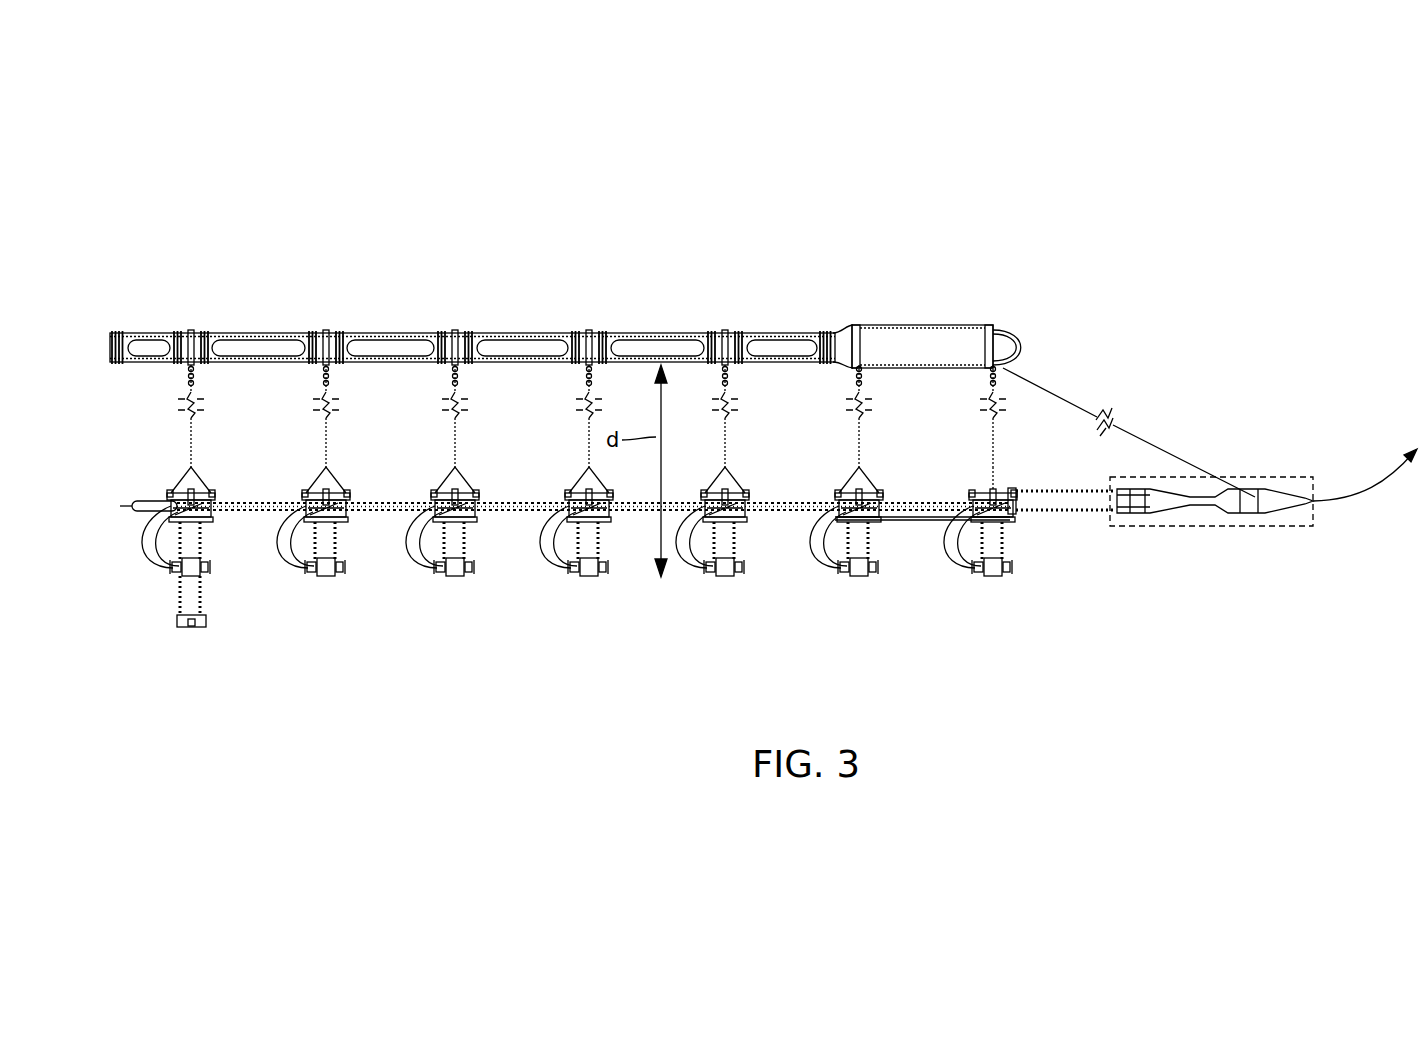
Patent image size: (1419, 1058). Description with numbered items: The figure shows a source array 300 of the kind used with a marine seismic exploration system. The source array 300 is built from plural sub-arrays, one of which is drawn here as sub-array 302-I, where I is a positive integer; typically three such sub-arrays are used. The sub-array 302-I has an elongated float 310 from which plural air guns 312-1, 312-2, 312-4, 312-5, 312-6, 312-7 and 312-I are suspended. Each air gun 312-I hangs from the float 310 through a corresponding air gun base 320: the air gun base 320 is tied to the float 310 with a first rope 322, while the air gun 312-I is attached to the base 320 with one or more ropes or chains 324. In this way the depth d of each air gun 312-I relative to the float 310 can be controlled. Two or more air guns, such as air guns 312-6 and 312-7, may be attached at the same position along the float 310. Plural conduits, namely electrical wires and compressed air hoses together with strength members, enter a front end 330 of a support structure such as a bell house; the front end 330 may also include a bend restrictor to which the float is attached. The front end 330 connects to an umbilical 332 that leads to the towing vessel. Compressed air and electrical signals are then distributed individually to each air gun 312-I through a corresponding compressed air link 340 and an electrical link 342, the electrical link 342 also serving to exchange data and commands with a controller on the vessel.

The source array 300 is at (1222, 252).
The sub-array 302-I is at (1072, 362).
The float 310 is at (926, 340).
The air gun 312-1 is at (455, 578).
The air gun 312-2 is at (555, 506).
The air gun 312-4 is at (725, 578).
The air gun 312-5 is at (859, 578).
The air gun 312-6 is at (209, 567).
The air gun 312-7 is at (192, 628).
The air gun 312-I is at (988, 506).
The air gun base 320 is at (1020, 530).
The first rope 322 is at (997, 440).
The ropes or chains 324 is at (936, 537).
The front end 330 is at (1213, 527).
The umbilical 332 is at (1340, 503).
The compressed air link 340 is at (526, 545).
The electrical link 342 is at (535, 563).